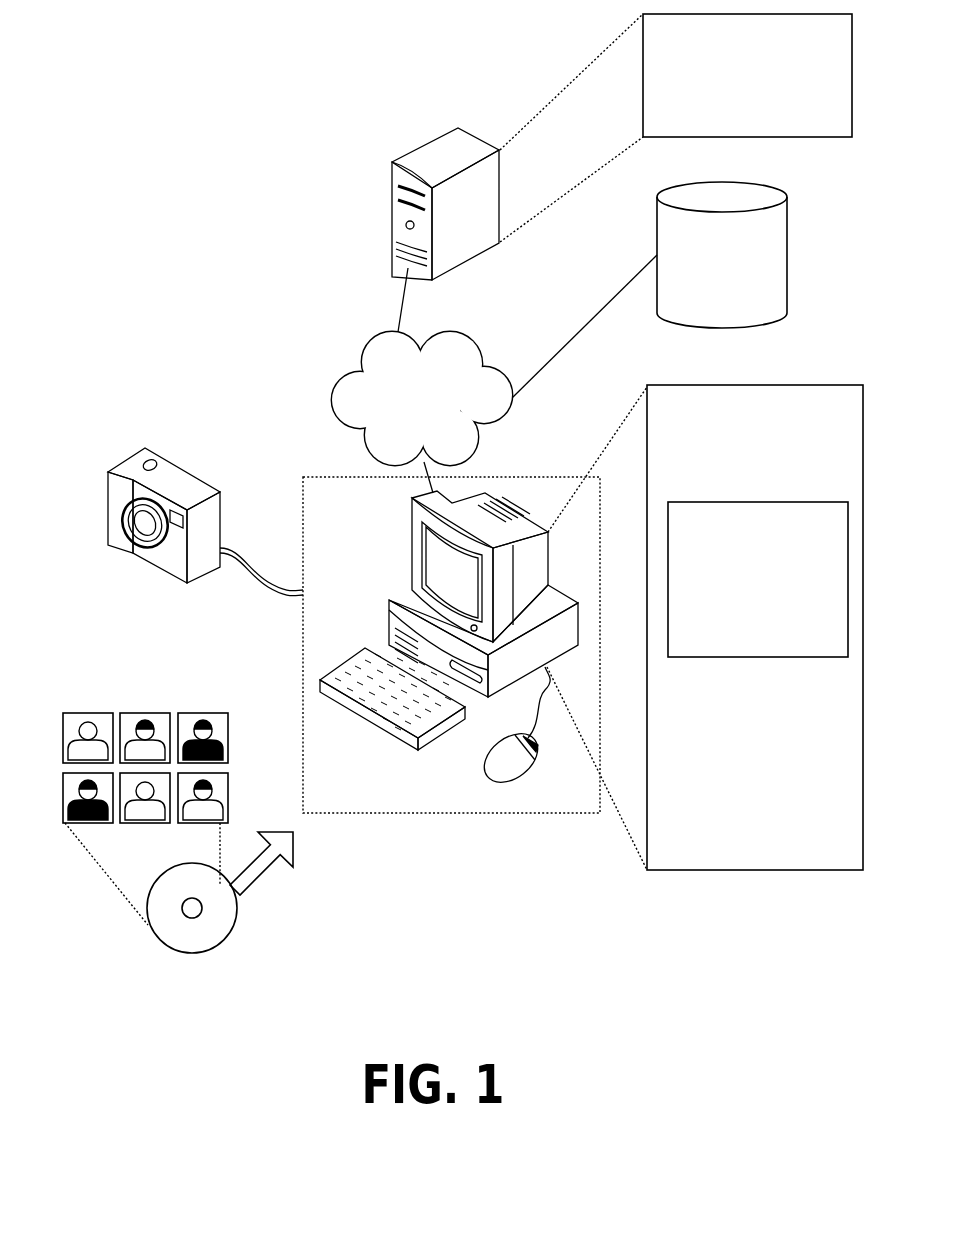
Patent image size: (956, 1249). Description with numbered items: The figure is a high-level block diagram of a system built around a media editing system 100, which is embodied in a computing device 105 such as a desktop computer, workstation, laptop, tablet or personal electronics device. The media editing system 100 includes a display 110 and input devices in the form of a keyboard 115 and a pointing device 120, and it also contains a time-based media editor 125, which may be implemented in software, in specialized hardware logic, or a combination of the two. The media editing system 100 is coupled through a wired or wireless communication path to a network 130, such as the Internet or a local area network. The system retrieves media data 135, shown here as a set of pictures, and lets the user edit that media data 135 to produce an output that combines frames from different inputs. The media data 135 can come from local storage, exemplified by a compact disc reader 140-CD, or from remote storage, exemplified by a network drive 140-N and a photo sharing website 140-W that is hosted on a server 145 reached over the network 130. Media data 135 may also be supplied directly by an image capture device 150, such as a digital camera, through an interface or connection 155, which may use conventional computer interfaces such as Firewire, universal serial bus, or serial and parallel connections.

The media editing system 100 is at (822, 445).
The computing device 105 is at (490, 466).
The display 110 is at (412, 568).
The keyboard 115 is at (378, 727).
The pointing device 120 is at (487, 773).
The time-based media editor 125 is at (740, 630).
The network 130 is at (404, 422).
The media data 135 is at (110, 682).
The compact disc (CD) reader 140-CD is at (235, 917).
The network drive 140-N is at (752, 300).
The photo sharing website 140-W is at (716, 112).
The server 145 is at (435, 138).
The image capture device 150 is at (130, 458).
The interface or connection 155 is at (238, 548).